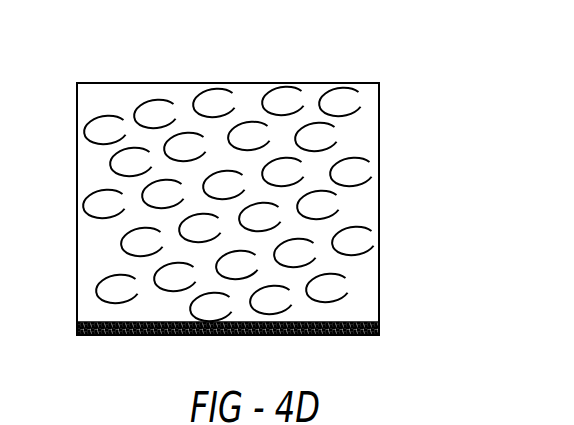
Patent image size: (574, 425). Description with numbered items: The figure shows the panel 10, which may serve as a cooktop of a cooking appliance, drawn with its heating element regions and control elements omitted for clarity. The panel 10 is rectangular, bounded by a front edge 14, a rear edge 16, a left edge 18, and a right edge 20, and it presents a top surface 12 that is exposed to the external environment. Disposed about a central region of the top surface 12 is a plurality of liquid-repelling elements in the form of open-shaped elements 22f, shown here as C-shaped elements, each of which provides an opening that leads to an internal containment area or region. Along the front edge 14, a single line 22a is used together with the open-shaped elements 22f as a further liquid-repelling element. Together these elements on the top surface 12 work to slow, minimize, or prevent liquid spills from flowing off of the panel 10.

The panel 10 is at (97, 171).
The top surface 12 is at (247, 100).
The front edge 14 is at (330, 337).
The rear edge 16 is at (152, 83).
The left edge 18 is at (77, 268).
The right edge 20 is at (380, 123).
The single lines 22a is at (160, 337).
The open-shaped elements 22f is at (340, 206).